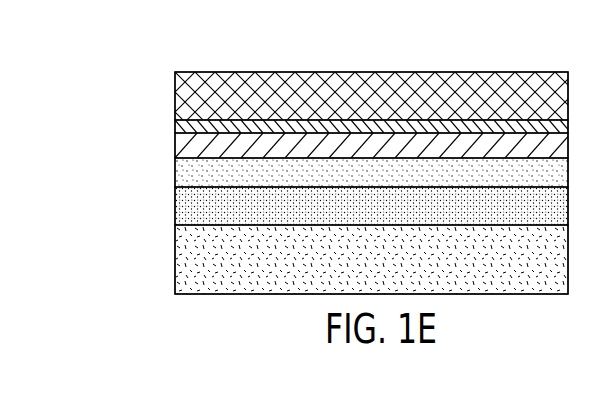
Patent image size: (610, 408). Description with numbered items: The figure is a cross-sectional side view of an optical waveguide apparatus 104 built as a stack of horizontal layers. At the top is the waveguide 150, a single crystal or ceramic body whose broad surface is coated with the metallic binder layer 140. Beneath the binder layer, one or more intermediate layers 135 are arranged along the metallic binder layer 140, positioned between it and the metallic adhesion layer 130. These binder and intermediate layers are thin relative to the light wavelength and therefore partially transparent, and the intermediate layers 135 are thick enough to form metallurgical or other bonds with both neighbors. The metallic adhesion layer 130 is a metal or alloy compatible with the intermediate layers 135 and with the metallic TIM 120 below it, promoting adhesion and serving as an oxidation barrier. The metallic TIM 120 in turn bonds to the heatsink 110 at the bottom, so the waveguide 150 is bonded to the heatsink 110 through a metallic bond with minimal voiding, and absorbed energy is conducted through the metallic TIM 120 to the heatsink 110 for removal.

The optical waveguide apparatus 104 is at (401, 63).
The waveguide 150 is at (558, 100).
The metallic binder layer 140 is at (557, 128).
The intermediate layers 135 is at (557, 152).
The metallic adhesion layer 130 is at (557, 175).
The metallic TIM 120 is at (557, 208).
The heatsink 110 is at (557, 267).